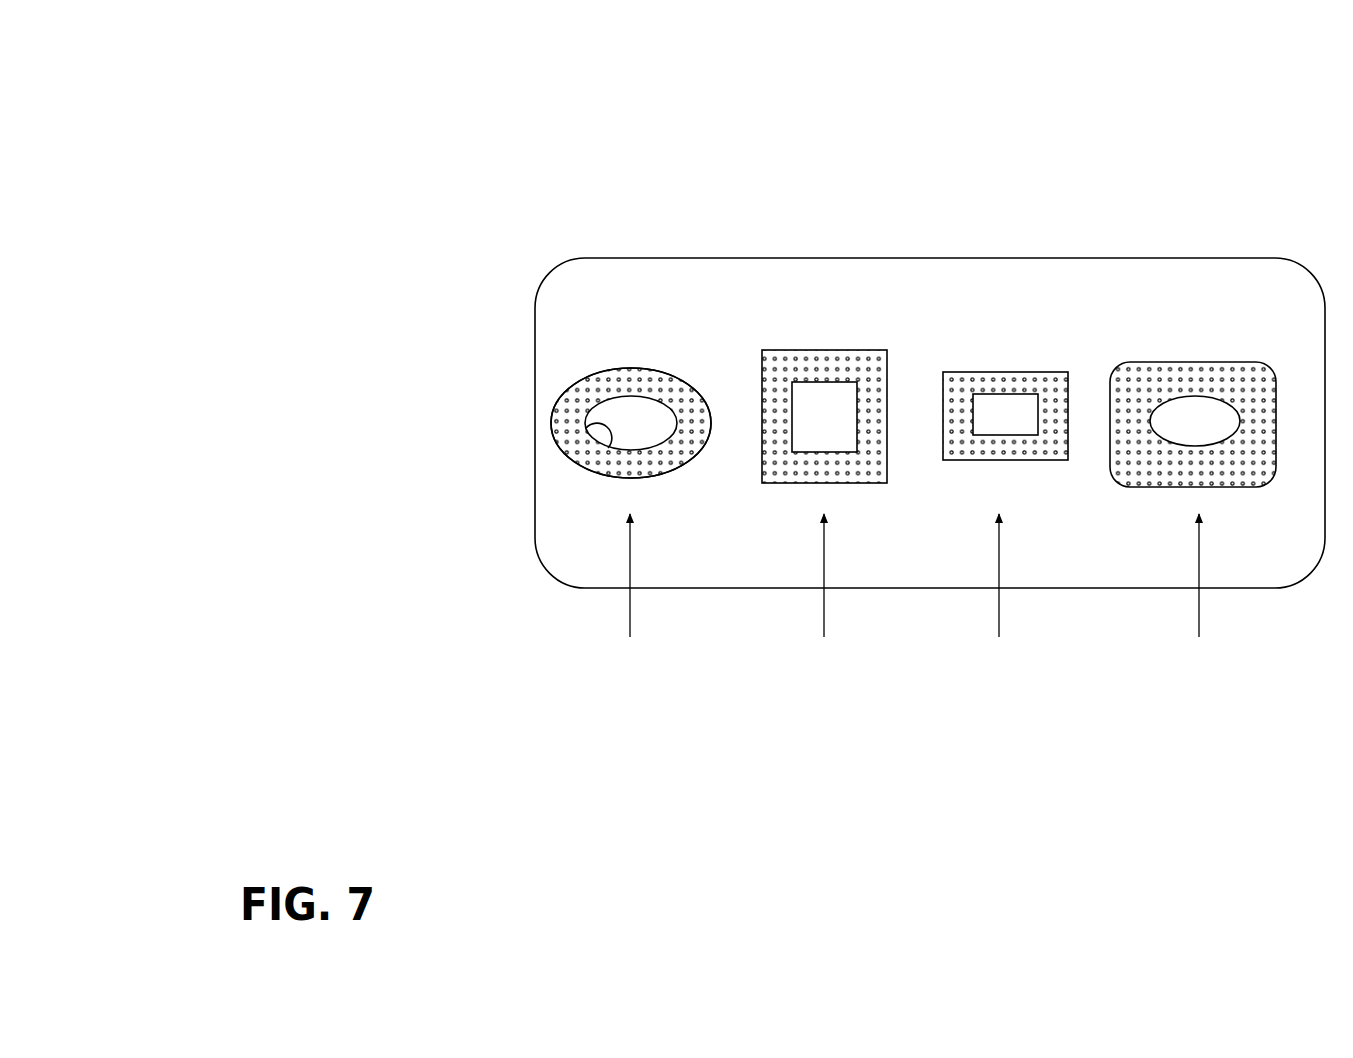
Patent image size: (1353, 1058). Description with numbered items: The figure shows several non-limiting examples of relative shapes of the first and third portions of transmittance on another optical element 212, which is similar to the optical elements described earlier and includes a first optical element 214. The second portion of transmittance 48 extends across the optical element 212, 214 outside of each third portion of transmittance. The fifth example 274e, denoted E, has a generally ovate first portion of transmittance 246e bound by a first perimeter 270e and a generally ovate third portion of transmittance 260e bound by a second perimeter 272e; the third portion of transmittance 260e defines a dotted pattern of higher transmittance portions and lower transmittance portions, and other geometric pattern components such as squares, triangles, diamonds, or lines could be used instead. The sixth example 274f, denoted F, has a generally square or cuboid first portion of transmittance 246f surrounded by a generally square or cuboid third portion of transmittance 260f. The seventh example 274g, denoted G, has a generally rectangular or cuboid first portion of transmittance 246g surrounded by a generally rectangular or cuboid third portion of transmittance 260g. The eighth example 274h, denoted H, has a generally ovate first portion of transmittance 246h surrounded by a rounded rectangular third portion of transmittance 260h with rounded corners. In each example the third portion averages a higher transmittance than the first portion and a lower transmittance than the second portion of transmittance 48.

The optical element 212 is at (933, 55).
The first optical element 214 is at (658, 212).
The second portion of transmittance 48 is at (696, 306).
The third portion of transmittance 260e is at (583, 397).
The first portion of transmittance 246e is at (620, 410).
The first perimeter 270e is at (588, 433).
The second perimeter 272e is at (590, 468).
The fifth example 274e is at (632, 591).
The third portion of transmittance 260f is at (783, 362).
The first portion of transmittance 246f is at (820, 390).
The sixth example 274f is at (825, 591).
The third portion of transmittance 260g is at (993, 383).
The first portion of transmittance 246g is at (1028, 405).
The seventh example 274g is at (1008, 591).
The third portion of transmittance 260h is at (1185, 370).
The first portion of transmittance 246h is at (1217, 415).
The eighth example 274h is at (1203, 591).